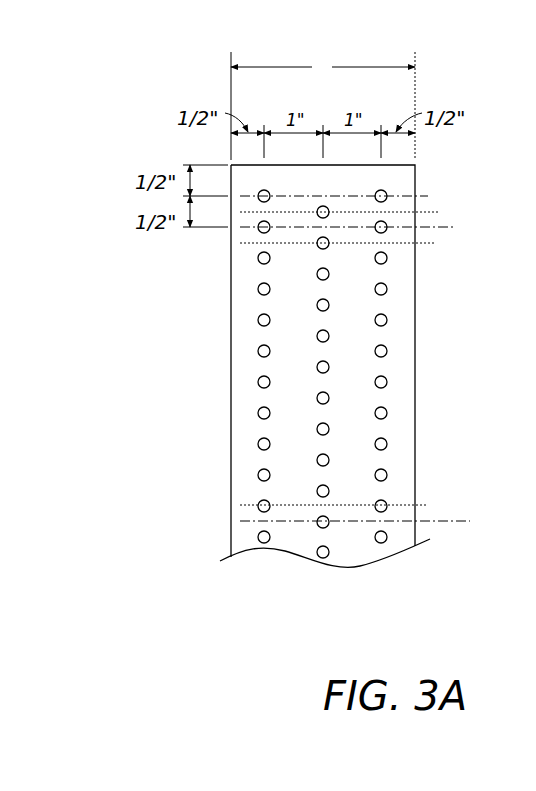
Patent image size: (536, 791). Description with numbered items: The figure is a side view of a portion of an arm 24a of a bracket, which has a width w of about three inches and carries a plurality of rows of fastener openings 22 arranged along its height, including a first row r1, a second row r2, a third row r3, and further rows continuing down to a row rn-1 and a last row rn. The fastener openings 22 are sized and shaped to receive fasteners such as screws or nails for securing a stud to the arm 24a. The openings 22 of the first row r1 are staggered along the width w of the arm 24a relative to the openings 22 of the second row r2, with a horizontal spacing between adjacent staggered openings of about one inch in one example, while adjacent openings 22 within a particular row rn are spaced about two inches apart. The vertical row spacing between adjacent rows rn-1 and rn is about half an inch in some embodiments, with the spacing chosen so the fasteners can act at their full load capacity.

The fastener openings 22 is at (328, 425).
The arm 24a is at (418, 287).
The first row r1 is at (340, 198).
The second row r2 is at (348, 213).
The third row r3 is at (355, 229).
The row preceding the last row rn-1 is at (347, 506).
The nth row rn is at (364, 522).
The width w is at (323, 69).